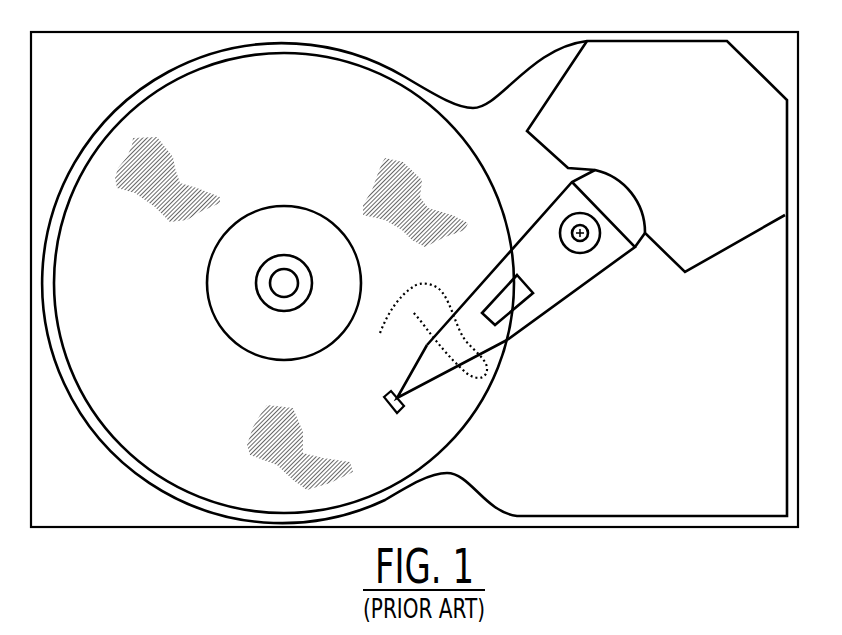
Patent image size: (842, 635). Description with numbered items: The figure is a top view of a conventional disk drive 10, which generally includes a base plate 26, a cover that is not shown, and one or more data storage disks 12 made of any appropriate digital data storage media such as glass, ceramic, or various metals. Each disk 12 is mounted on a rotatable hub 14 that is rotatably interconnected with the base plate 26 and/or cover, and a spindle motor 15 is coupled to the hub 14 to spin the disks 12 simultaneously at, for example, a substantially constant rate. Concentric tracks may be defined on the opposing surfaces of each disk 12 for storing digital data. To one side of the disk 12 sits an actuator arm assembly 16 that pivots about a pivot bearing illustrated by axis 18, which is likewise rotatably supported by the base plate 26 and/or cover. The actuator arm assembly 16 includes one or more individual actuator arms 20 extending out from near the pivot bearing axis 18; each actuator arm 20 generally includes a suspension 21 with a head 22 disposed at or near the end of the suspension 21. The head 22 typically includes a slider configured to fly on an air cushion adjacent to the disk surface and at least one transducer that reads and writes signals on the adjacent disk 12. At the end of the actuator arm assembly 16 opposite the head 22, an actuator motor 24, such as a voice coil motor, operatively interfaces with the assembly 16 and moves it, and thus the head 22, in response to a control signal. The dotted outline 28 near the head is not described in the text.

The disk drive 10 is at (636, 549).
The data storage disk 12 is at (316, 53).
The rotatable hub 14 is at (316, 212).
The spindle motor 15 is at (262, 303).
The actuator arm assembly 16 is at (583, 296).
The pivot bearing axis 18 is at (590, 241).
The actuator arm 20 is at (530, 321).
The suspension 21 is at (437, 387).
The head 22 is at (393, 409).
The actuator motor 24 is at (686, 69).
The base plate 26 is at (232, 528).
The load/unload ramp 28 is at (427, 331).